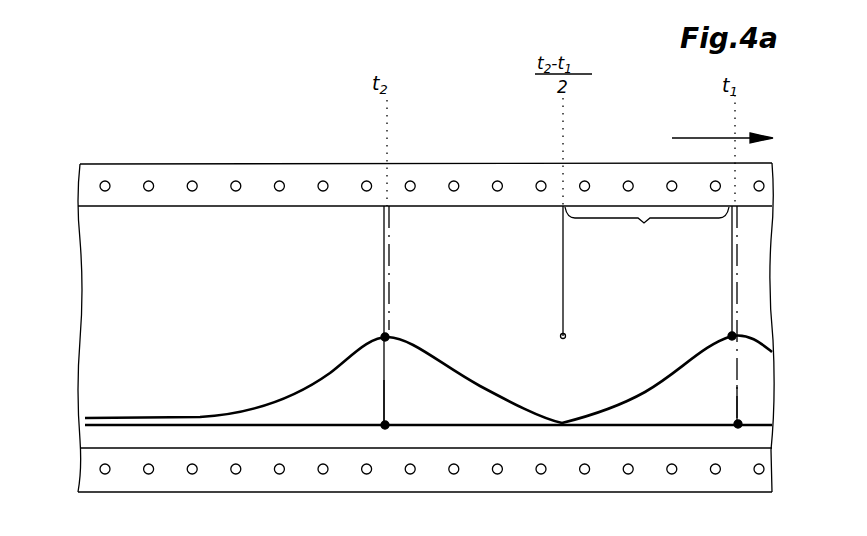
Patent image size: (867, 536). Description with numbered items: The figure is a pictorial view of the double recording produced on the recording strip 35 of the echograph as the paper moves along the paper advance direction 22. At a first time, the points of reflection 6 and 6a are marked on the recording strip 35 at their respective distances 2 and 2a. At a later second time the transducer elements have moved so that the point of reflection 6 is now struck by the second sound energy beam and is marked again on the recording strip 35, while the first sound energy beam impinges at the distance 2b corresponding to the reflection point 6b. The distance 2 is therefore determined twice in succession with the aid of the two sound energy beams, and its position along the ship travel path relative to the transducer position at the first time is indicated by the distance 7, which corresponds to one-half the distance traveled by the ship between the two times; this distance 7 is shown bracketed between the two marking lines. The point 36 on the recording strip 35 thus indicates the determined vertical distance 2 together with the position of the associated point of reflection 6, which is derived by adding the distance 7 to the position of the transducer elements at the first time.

The distance 2 is at (390, 272).
The distance 2a is at (738, 397).
The distance 2b is at (388, 385).
The point of reflection 6 is at (383, 336).
The point of reflection 6a is at (735, 421).
The point of reflection 6b is at (384, 422).
The distance 7 is at (647, 229).
The paper advance direction 22 is at (722, 127).
The recording strip 35 is at (90, 445).
The point 36 is at (562, 341).